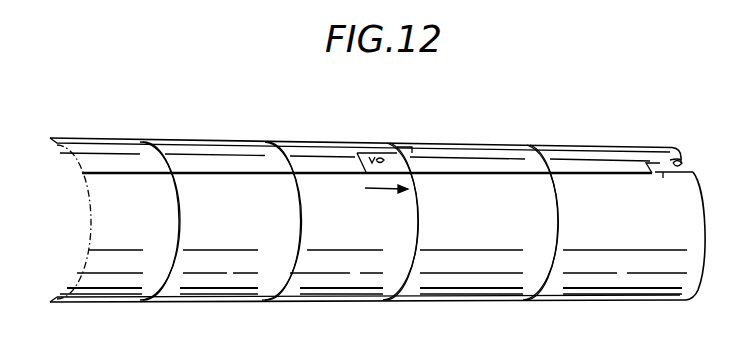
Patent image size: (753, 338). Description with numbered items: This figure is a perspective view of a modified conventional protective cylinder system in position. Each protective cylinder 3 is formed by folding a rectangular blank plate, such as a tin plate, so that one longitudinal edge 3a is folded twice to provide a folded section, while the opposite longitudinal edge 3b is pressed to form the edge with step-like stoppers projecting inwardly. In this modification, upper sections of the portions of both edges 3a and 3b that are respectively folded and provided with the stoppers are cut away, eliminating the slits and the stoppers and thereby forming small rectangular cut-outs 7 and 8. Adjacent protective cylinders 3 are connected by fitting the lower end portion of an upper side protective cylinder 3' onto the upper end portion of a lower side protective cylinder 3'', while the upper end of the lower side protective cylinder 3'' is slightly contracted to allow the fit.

The protective cylinder 3 is at (377, 191).
The upper side protective cylinder 3' is at (548, 189).
The lower side protective cylinder 3'' is at (239, 188).
The longitudinal edge 3a is at (120, 170).
The opposite longitudinal edge 3b is at (412, 165).
The cut-out 7 is at (378, 157).
The cut-out 8 is at (381, 162).